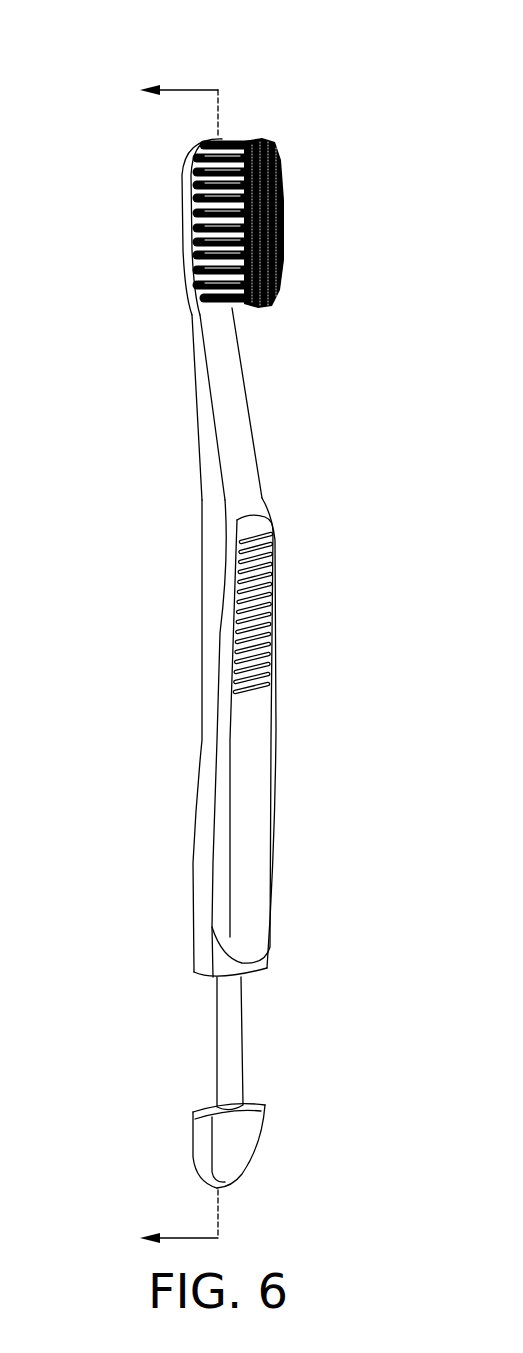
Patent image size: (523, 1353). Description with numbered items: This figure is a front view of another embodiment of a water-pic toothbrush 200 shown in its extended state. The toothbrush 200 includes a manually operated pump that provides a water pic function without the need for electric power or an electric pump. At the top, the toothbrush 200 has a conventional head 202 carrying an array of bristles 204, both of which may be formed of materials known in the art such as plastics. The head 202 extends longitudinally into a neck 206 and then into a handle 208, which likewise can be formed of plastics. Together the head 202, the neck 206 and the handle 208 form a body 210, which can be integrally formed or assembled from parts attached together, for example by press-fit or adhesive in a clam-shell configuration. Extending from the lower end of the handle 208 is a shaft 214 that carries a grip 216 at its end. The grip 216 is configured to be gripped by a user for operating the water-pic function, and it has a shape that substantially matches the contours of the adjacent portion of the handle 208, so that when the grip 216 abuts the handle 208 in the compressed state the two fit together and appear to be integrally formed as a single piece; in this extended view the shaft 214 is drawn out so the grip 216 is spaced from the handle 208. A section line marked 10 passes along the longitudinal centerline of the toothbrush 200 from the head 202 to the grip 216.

The water-pic toothbrush 200 is at (98, 50).
The head 202 is at (180, 226).
The bristles 204 is at (281, 200).
The neck 206 is at (247, 422).
The handle 208 is at (272, 693).
The body 210 is at (125, 590).
The shaft 214 is at (245, 1033).
The grip 216 is at (263, 1128).
The section line 10- 10 is at (166, 665).